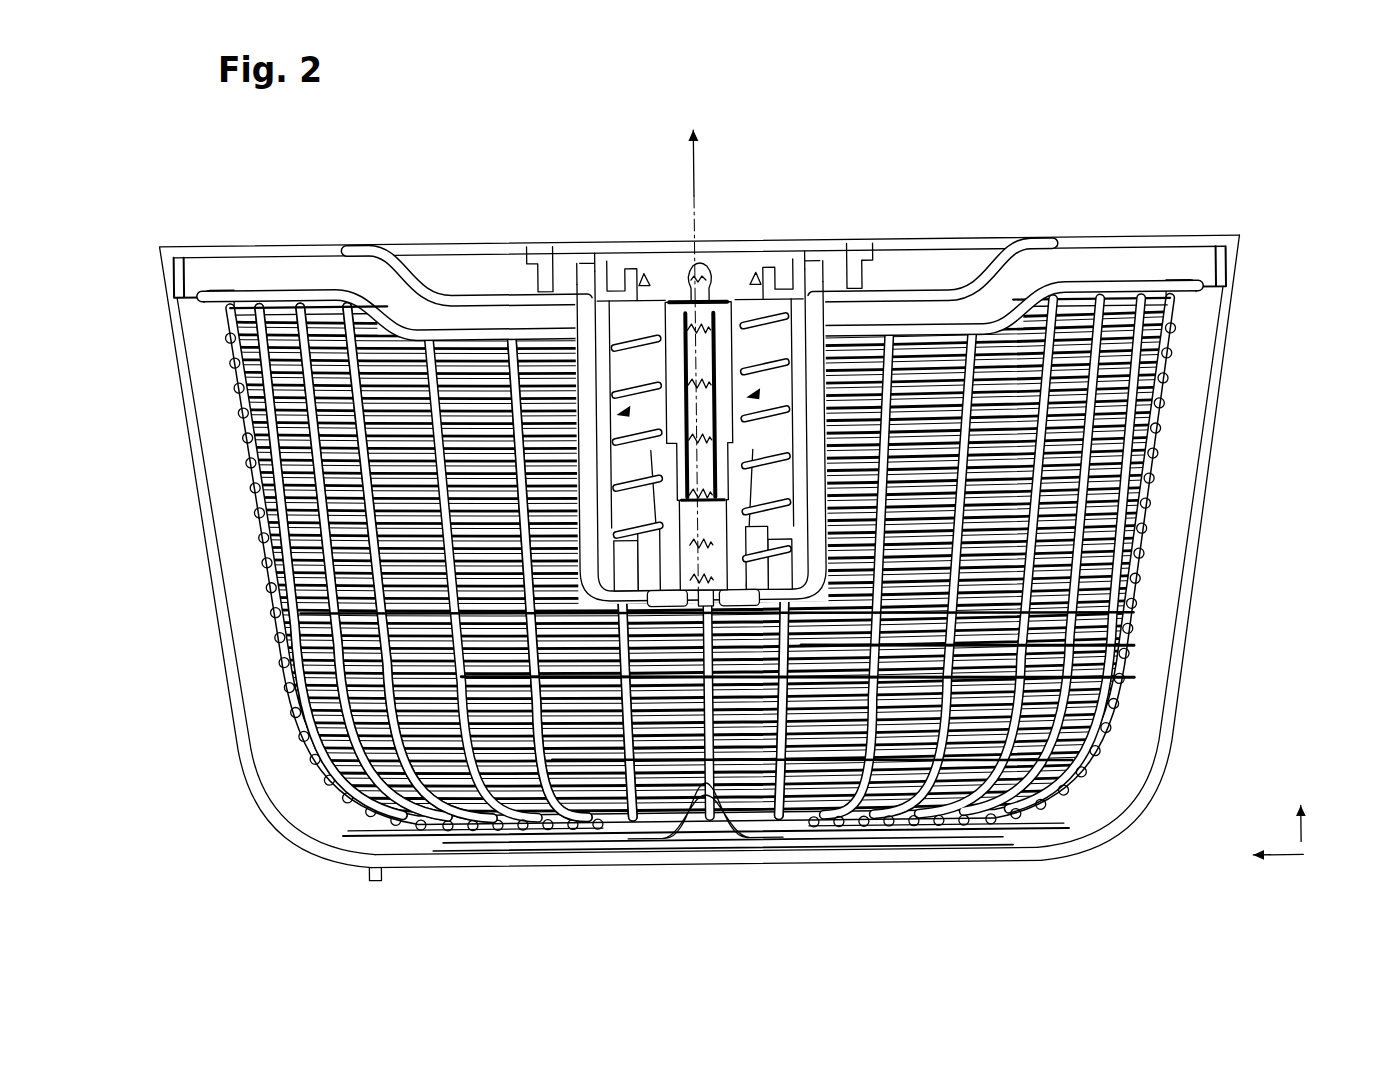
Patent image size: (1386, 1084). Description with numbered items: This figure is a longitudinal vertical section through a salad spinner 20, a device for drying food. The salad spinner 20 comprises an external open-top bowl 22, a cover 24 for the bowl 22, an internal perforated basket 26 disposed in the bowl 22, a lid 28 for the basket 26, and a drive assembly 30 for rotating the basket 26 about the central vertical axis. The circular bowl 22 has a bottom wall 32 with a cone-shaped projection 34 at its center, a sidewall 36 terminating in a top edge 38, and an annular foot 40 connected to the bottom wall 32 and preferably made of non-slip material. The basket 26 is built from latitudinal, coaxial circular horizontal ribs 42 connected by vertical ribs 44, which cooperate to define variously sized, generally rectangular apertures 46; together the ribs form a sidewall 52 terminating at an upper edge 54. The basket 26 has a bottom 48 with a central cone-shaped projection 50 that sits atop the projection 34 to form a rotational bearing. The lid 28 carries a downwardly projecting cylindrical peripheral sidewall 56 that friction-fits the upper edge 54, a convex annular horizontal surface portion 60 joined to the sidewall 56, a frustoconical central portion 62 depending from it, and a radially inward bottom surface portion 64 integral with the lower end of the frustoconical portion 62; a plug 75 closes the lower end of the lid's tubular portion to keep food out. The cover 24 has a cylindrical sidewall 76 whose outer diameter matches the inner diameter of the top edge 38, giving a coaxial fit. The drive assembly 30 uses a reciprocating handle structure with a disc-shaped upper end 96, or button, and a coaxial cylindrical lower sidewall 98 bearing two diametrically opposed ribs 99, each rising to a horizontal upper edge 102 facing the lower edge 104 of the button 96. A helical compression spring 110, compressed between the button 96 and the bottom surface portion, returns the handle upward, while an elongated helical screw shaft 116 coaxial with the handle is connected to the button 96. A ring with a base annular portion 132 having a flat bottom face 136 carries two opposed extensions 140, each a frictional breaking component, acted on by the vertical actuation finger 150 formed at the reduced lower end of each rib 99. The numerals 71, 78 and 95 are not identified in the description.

The salad spinner 20 is at (733, 535).
The bowl 22 is at (1208, 566).
The cover 24 is at (1081, 232).
The perforated basket 26 is at (1162, 544).
The lid 28 is at (1122, 272).
The drive assembly 30 is at (864, 297).
The bottom wall 32 is at (1012, 855).
The cone-shaped projection 34 is at (701, 846).
The sidewall 36 is at (1197, 601).
The top edge 38 is at (1234, 238).
The annular foot 40 is at (375, 877).
The horizontal ribs 42 is at (262, 538).
The vertical ribs 44 is at (330, 576).
The apertures 46 is at (366, 590).
The bottom 48 is at (622, 846).
The cone-shaped projection 50 is at (748, 851).
The sidewall 52 is at (229, 395).
The upper edge 54 is at (230, 299).
The cylindrical peripheral sidewall 56 is at (252, 282).
The convex annular horizontal surface portion 60 is at (470, 318).
The frustoconical shaped central portion 62 is at (392, 328).
The bottom surface portion 64 is at (573, 818).
The shaft 71 is at (757, 393).
The plug 75 is at (790, 820).
The cylindrical sidewall 76 is at (1230, 295).
The cover plate 78 is at (514, 294).
The shaft head 95 is at (714, 262).
The disc shaped upper end 96 is at (548, 244).
The cylindrical lower sidewall 98 is at (666, 298).
The ribs 99 is at (603, 300).
The upper edge 102 is at (818, 262).
The lower edge 104 is at (858, 290).
The helical compression spring 110 is at (630, 410).
The helical screw shaft 116 is at (730, 262).
The base annular portion 132 is at (540, 820).
The flat bottom face 136 is at (1118, 704).
The extensions 140 is at (470, 680).
The vertical actuation finger 150 is at (500, 682).